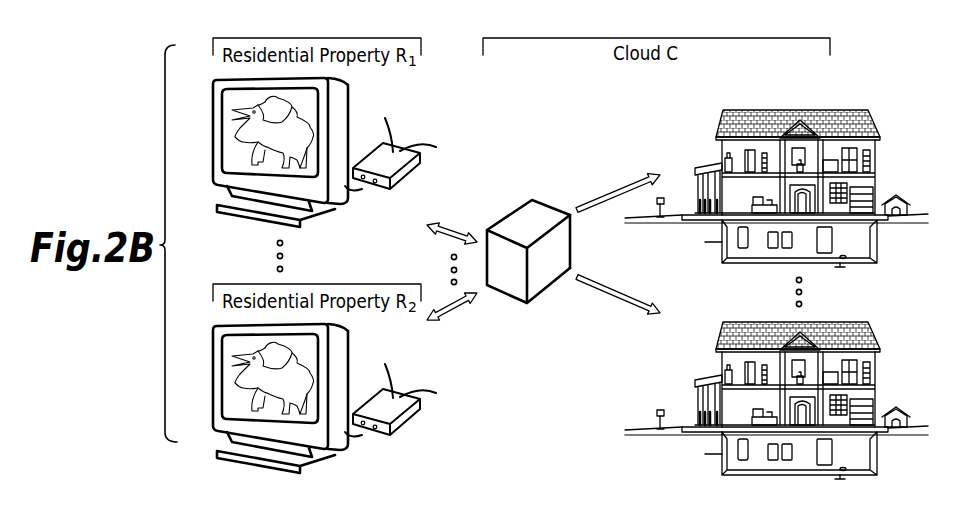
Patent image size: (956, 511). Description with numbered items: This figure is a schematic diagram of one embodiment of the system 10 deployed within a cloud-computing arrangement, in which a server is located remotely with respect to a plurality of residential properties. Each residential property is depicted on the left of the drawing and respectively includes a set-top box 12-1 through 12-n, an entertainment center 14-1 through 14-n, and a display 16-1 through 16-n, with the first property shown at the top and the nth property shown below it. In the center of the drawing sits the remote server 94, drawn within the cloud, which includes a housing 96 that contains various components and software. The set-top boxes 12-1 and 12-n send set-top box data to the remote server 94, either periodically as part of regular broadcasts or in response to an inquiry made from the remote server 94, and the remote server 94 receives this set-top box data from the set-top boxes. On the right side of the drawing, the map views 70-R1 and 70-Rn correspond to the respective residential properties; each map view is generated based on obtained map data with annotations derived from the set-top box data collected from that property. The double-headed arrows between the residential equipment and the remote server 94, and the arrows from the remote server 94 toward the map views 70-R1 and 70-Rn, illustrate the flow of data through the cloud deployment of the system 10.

The system 10 is at (150, 88).
The display 16-1 is at (349, 95).
The display 16-n is at (309, 398).
The set-top box 12-1 is at (422, 180).
The set-top box 12-n is at (419, 417).
The entertainment center 14-1 is at (425, 133).
The entertainment center 14-n is at (448, 376).
The remote server 94 is at (560, 217).
The housing 96 is at (567, 247).
The map view 70-R1 is at (713, 150).
The map view 70-Rn is at (713, 358).